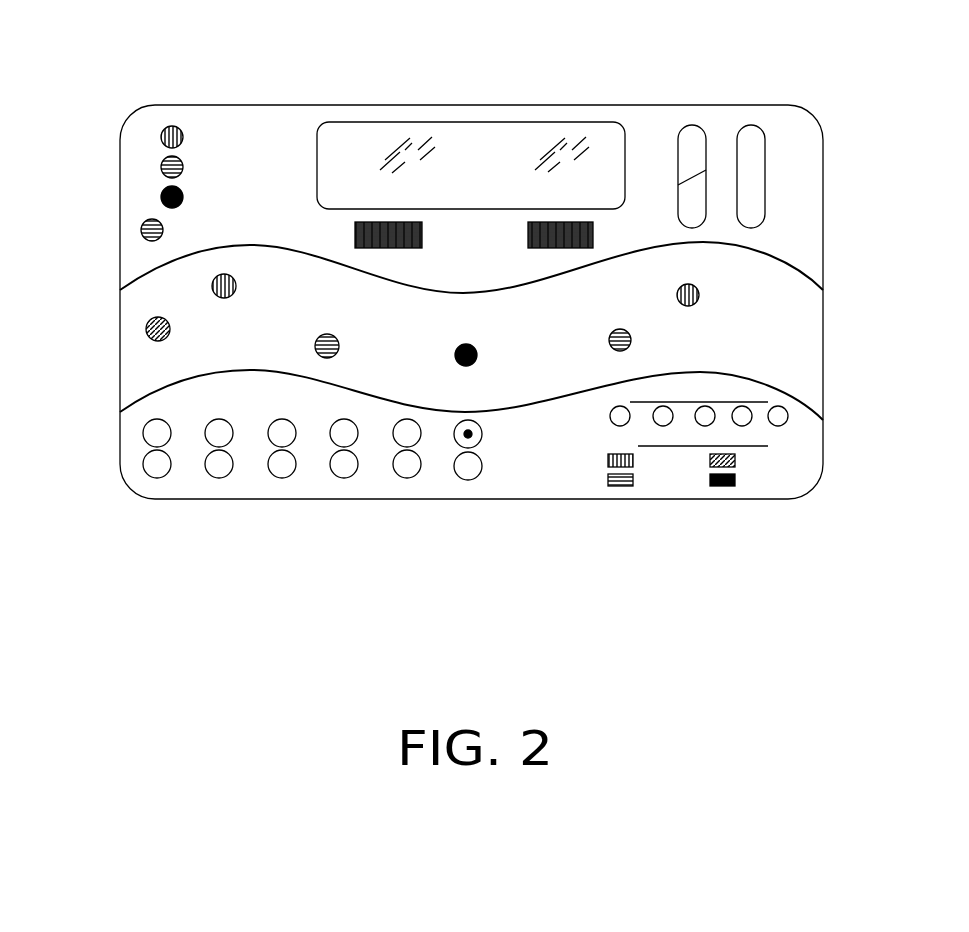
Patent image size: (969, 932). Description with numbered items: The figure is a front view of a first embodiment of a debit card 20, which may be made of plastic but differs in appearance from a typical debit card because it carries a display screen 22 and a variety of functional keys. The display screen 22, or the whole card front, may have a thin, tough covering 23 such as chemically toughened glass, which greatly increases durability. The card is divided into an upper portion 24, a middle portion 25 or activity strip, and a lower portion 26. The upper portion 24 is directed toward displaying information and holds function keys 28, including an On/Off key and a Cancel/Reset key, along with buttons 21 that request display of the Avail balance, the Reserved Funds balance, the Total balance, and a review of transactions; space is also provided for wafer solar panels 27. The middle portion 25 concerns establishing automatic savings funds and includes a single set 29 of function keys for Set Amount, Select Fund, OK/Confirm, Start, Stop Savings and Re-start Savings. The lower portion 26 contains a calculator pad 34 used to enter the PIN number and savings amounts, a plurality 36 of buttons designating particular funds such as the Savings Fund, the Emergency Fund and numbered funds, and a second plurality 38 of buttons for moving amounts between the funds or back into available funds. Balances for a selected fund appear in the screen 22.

The debit card 20 is at (558, 105).
The buttons 21 is at (174, 126).
The display screen 22 is at (338, 146).
The thin, tough covering 23 is at (464, 487).
The upper portion 24 is at (169, 127).
The middle portion 25 is at (135, 312).
The lower portion 26 is at (263, 480).
The wafer solar panels 27 is at (525, 225).
The function keys 28 is at (743, 125).
The set of function keys 29 is at (152, 318).
The calculator pad 34 is at (143, 463).
The plurality of buttons designating particular funds 36 is at (789, 423).
The second plurality of function buttons 38 is at (710, 487).